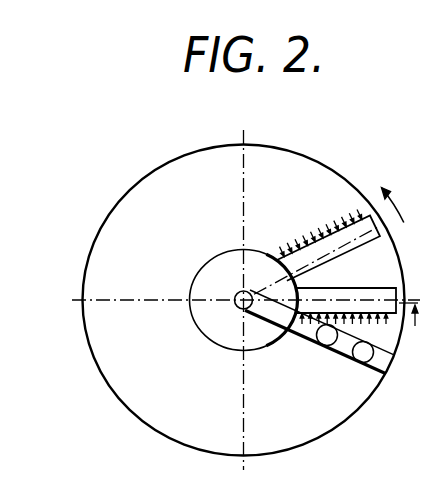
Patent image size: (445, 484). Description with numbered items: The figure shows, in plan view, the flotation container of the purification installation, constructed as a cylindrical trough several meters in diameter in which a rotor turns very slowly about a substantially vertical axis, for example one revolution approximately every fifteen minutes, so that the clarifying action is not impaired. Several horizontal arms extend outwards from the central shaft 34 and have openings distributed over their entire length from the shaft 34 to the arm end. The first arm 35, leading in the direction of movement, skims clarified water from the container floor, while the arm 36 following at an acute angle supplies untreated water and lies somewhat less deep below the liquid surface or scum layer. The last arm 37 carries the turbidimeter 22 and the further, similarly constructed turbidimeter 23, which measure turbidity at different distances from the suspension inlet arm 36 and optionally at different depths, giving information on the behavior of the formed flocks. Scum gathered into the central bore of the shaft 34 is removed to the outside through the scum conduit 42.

The turbidimeter 22 is at (361, 363).
The further turbidimeter 23 is at (326, 346).
The shaft 34 is at (262, 347).
The first arm 35 is at (367, 246).
The suspension inlet arm 36 is at (391, 299).
The last arm 37 is at (383, 360).
The scum conduit 42 is at (238, 308).